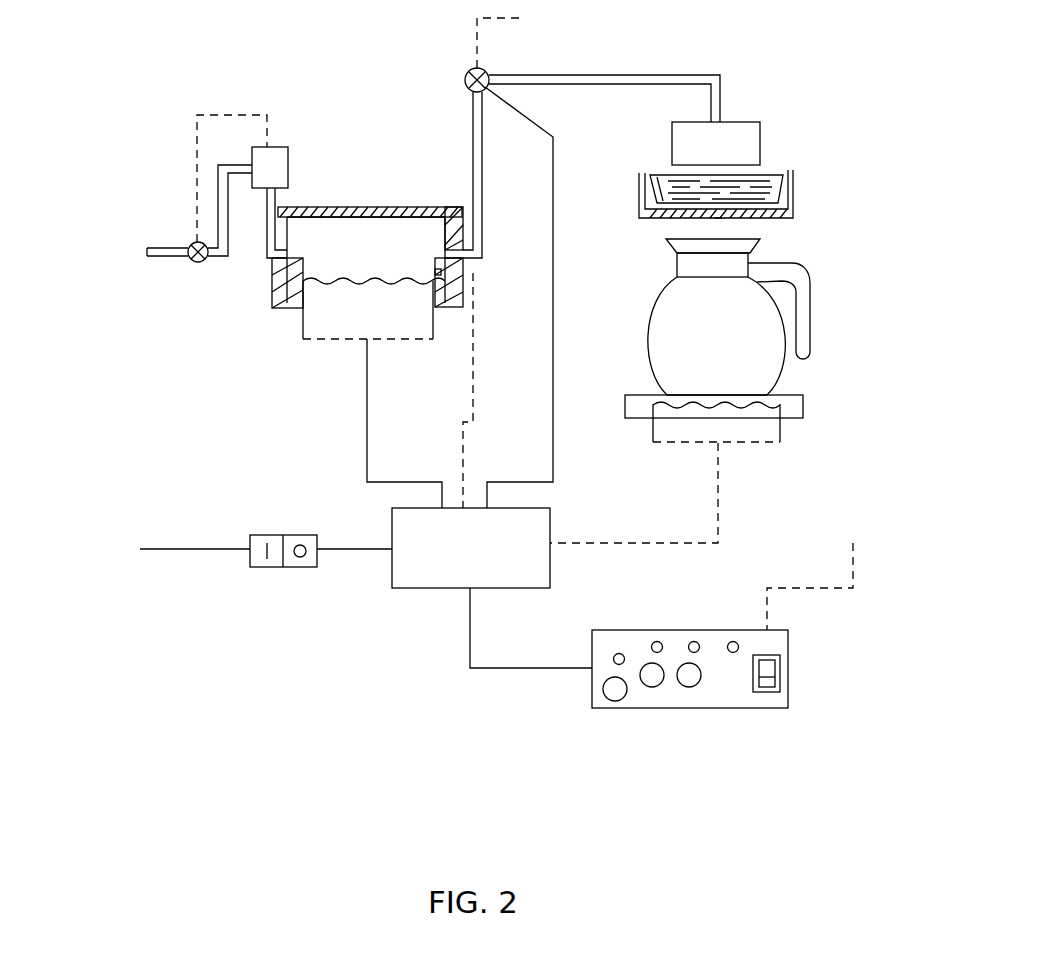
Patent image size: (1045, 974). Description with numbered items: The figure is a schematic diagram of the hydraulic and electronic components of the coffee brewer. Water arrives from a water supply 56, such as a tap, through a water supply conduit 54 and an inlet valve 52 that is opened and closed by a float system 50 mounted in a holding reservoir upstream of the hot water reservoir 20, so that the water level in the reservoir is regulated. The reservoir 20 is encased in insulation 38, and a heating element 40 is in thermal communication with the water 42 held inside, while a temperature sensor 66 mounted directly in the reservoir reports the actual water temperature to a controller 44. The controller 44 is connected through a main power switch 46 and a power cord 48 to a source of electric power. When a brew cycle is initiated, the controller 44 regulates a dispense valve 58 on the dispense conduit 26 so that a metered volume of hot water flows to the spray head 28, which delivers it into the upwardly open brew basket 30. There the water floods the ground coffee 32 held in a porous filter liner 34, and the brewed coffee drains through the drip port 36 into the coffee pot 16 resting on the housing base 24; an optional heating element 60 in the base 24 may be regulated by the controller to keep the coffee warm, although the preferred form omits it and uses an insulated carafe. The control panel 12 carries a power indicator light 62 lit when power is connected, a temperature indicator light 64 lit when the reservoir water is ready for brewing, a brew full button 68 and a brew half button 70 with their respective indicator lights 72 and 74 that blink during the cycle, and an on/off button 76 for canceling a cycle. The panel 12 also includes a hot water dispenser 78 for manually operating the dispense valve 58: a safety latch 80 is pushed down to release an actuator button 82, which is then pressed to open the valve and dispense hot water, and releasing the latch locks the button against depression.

The control panel 12 is at (690, 714).
The coffee pot 16 is at (701, 317).
The hot water reservoir 20 is at (246, 320).
The housing base 24 is at (746, 397).
The dispense conduit 26 is at (604, 80).
The spray head 28 is at (750, 124).
The brew basket 30 is at (751, 203).
The ground coffee 32 is at (746, 168).
The filter liner 34 is at (629, 164).
The drip port 36 is at (774, 239).
The insulation 38 is at (370, 230).
The heating element 40 is at (372, 394).
The water 42 is at (216, 299).
The controller 44 is at (482, 588).
The main power switch 46 is at (312, 527).
The power cord 48 is at (222, 536).
The float system 50 is at (285, 177).
The inlet valve 52 is at (188, 178).
The water supply conduit 54 is at (155, 276).
The water supply 56 is at (119, 226).
The dispense valve 58 is at (567, 256).
The heating element 60 is at (673, 472).
The power indicator light 62 is at (640, 609).
The temperature indicator light 64 is at (736, 630).
The temperature sensor 66 is at (478, 268).
The brew button 68 is at (672, 710).
The brew button 70 is at (710, 700).
The indicator light 72 is at (677, 612).
The indicator light 74 is at (712, 622).
The on/off button 76 is at (571, 715).
The hot water dispenser 78 is at (832, 623).
The safety latch 80 is at (785, 658).
The actuator button 82 is at (808, 681).